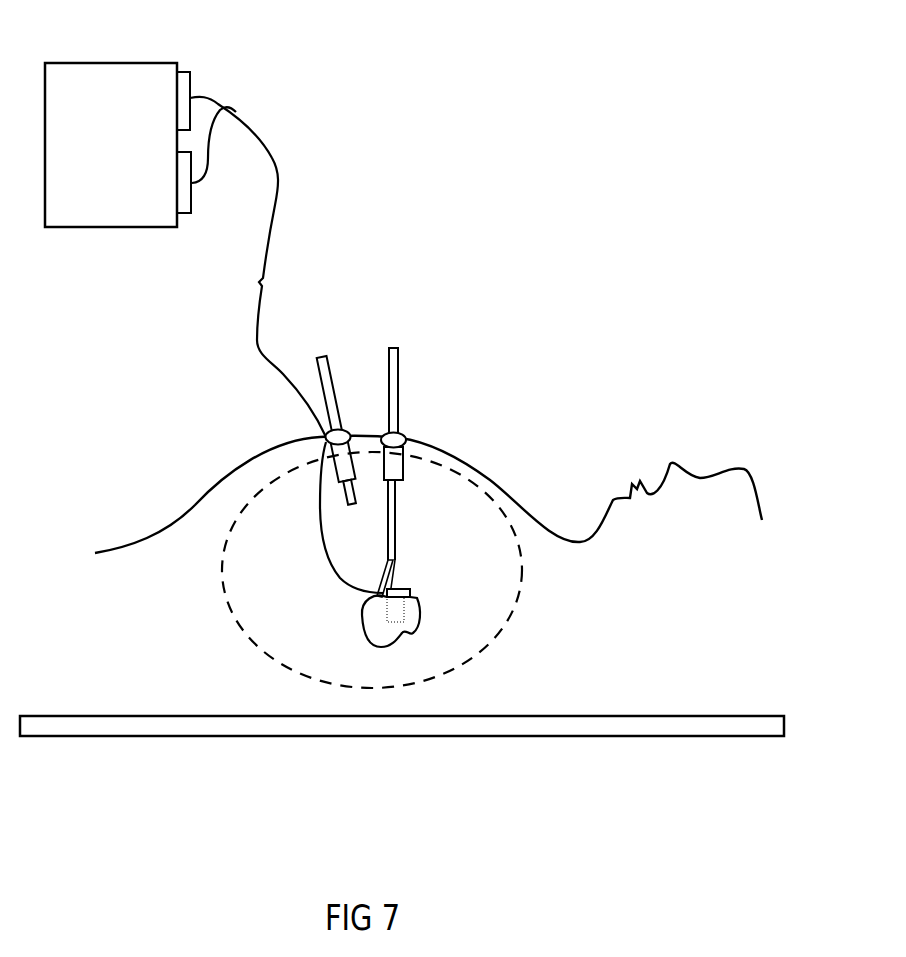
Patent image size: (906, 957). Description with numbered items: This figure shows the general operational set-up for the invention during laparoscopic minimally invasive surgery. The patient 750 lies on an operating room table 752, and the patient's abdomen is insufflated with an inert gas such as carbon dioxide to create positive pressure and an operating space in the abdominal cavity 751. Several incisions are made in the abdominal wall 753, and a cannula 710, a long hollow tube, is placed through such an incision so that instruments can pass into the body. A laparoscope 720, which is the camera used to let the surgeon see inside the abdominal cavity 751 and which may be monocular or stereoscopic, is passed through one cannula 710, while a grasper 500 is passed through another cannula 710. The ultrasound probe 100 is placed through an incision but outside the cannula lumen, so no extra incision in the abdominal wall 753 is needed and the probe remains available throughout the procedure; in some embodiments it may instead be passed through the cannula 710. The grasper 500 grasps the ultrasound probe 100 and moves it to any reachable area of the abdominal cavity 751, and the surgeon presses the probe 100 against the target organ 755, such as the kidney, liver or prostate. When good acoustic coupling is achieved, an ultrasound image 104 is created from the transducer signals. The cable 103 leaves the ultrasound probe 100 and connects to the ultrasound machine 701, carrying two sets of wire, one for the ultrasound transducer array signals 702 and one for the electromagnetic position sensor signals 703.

The ultrasound machine 701 is at (104, 62).
The ultrasound transducer array signals 702 is at (207, 98).
The electromagnetic position sensor signals 703 is at (207, 180).
The cable 103 is at (255, 349).
The laparoscope 720 is at (336, 388).
The cannula 710 is at (345, 433).
The grasper 500 is at (397, 375).
The abdominal wall 753 is at (453, 453).
The patient 750 is at (728, 462).
The abdominal cavity 751 is at (292, 667).
The target organ 755 is at (366, 645).
The ultrasound probe 100 is at (410, 587).
The ultrasound image 104 is at (405, 622).
The operating room table 752 is at (658, 737).